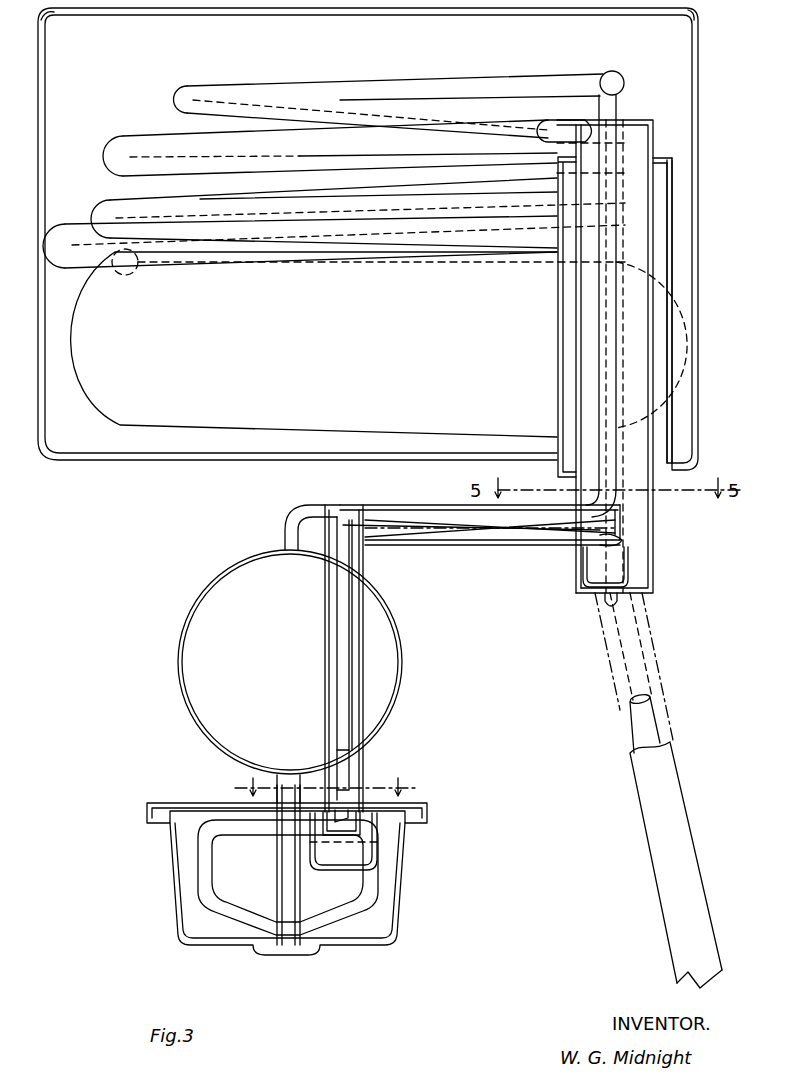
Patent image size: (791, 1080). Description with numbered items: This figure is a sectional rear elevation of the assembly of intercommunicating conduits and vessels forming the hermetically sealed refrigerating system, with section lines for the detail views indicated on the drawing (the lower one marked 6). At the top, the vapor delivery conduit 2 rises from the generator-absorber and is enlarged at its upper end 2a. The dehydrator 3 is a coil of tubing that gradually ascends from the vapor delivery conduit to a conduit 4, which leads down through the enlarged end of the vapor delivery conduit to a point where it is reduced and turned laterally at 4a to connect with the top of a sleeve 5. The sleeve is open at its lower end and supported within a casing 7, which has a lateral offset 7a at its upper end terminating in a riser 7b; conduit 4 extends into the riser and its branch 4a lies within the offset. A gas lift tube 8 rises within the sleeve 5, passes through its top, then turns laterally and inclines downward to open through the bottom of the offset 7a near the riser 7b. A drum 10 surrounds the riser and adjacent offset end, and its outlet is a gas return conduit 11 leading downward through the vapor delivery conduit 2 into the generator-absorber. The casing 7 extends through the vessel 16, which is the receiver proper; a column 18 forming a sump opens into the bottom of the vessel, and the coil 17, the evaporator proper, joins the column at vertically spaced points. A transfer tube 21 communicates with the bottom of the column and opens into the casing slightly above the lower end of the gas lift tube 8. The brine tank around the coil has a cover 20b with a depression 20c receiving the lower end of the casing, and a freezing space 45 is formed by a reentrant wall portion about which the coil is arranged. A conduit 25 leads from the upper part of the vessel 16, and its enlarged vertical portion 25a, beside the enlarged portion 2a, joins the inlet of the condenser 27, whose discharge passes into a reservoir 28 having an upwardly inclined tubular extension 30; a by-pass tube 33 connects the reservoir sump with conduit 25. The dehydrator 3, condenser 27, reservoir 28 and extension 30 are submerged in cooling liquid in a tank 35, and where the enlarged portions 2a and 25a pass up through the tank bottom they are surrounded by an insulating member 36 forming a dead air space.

The vapor delivery conduit 2 is at (672, 790).
The enlarged upper end of vapor delivery conduit 2a is at (653, 353).
The dehydrator 3 is at (460, 115).
The conduit 4 is at (599, 298).
The lateral branch of conduit 4a is at (429, 540).
The sleeve 5 is at (337, 680).
The section line 6 is at (323, 788).
The casing 7 is at (325, 728).
The lateral offset 7a is at (503, 545).
The riser 7b is at (618, 509).
The gas lift tube 8 is at (543, 545).
The drum 10 is at (630, 545).
The gas return conduit 11 is at (640, 729).
The vessel 16 is at (392, 688).
The coil 17 is at (378, 893).
The column 18 is at (277, 856).
The cover 20b is at (180, 800).
The depression 20c is at (372, 841).
The transfer tube 21 is at (297, 880).
The conduit 25 is at (312, 505).
The enlarged vertical portion of conduit 25a is at (606, 363).
The condenser 27 is at (160, 165).
The reservoir 28 is at (348, 343).
The tubular extension 30 is at (95, 228).
The by-pass tube 33 is at (604, 603).
The tank 35 is at (180, 461).
The insulating member 36 is at (673, 273).
The freezing space 45 is at (226, 885).